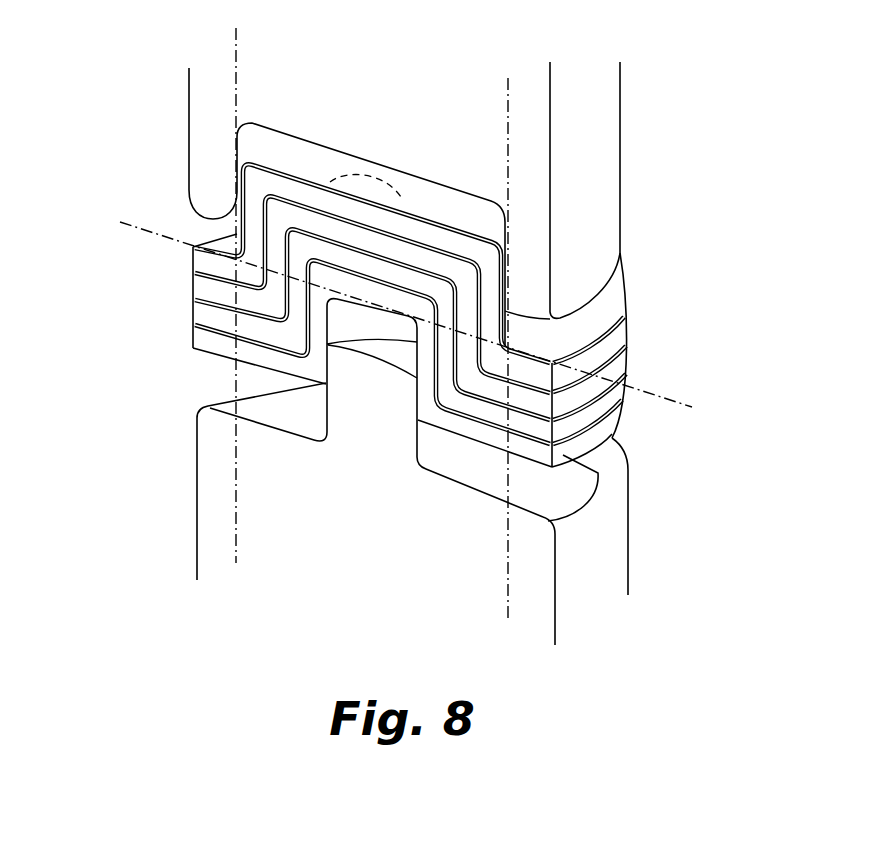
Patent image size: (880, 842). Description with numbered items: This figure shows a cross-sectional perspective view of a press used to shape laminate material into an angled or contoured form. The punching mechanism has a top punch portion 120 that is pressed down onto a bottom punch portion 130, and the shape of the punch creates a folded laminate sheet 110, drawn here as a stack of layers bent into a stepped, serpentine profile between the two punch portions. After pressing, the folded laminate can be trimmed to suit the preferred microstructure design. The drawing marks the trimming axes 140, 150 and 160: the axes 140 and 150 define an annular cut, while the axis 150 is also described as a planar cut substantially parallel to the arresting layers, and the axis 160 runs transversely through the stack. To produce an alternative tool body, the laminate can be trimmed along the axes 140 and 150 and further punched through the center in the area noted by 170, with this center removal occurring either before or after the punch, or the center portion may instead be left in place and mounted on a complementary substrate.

The folded laminate sheet 110 is at (650, 344).
The top punch portion 120 is at (602, 175).
The bottom punch portion 130 is at (610, 572).
The axis 140 is at (509, 555).
The axis 150 is at (240, 491).
The axis 160 is at (645, 390).
The center area 170 is at (377, 187).